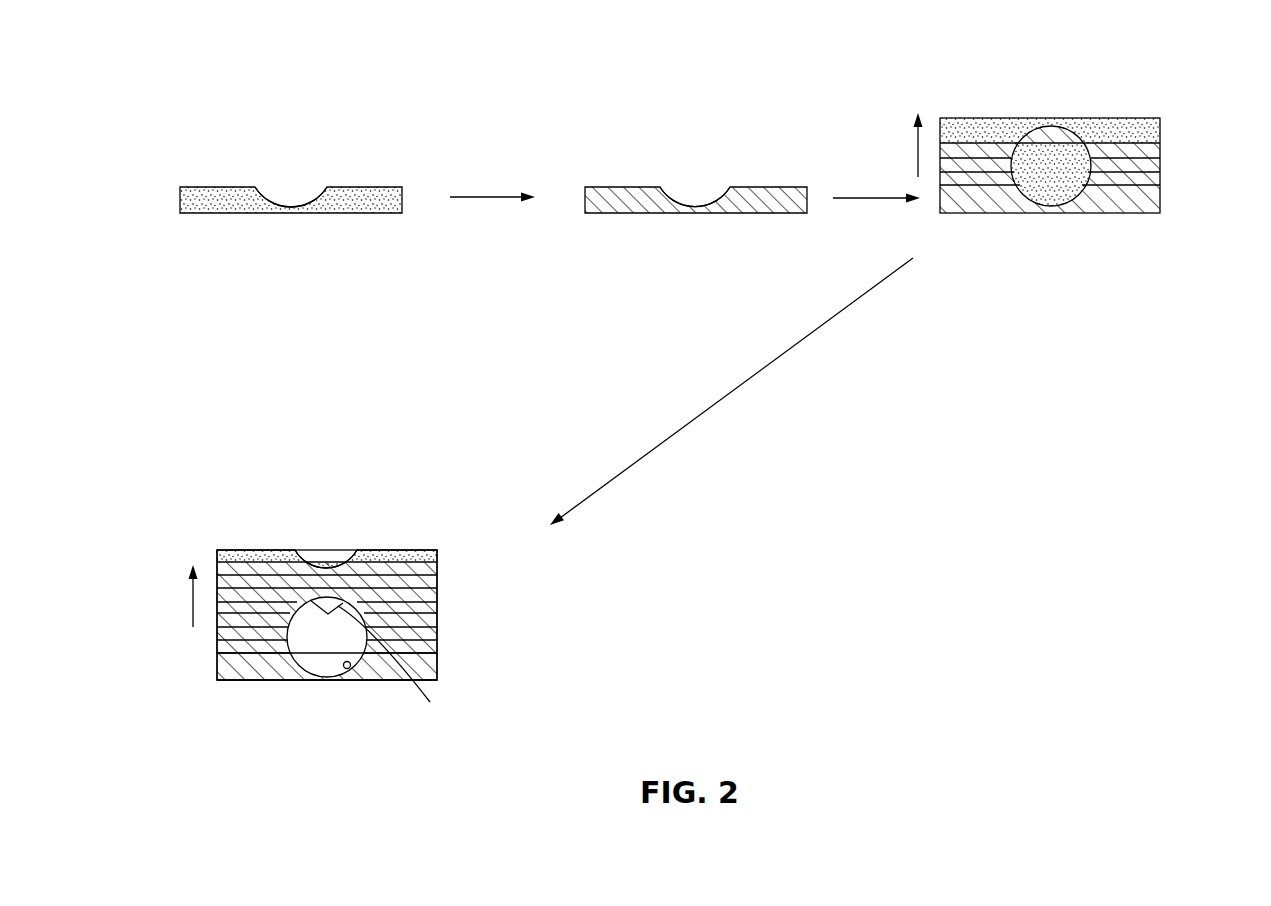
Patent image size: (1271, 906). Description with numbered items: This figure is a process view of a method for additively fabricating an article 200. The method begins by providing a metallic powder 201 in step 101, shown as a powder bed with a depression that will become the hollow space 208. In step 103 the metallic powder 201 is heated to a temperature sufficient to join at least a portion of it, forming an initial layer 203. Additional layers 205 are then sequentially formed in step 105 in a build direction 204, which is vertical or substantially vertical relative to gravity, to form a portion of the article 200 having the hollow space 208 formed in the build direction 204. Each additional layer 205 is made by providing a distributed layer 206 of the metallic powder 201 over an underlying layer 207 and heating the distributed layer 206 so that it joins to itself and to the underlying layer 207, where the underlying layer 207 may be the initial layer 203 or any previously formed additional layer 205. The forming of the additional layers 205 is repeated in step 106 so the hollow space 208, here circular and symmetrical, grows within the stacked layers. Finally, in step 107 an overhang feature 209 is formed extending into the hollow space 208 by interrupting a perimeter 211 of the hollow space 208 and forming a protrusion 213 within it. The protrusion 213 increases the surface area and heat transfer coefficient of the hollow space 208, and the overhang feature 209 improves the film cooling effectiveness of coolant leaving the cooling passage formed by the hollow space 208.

The providing step 101 is at (612, 375).
The heating step 103 is at (474, 190).
The sequentially forming step 105 is at (862, 190).
The repeating step 106 is at (730, 393).
The overhang forming step 107 is at (718, 387).
The article 200 is at (241, 716).
The metallic powder 201 is at (180, 200).
The initial layer 203 is at (437, 668).
The build direction 204 is at (910, 150).
The additional layers 205 is at (1160, 152).
The distributed layer 206 is at (1160, 130).
The underlying layer 207 is at (1160, 143).
The hollow space 208 is at (286, 175).
The overhang feature 209 is at (400, 672).
The perimeter 211 is at (352, 668).
The protrusion 213 is at (310, 600).